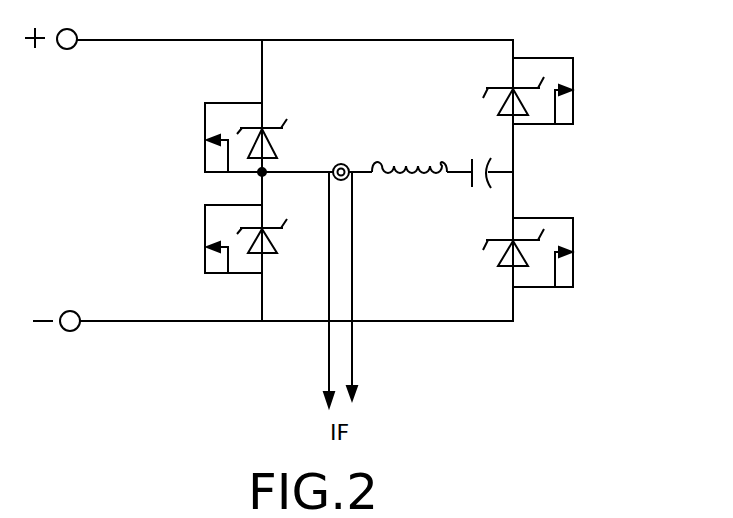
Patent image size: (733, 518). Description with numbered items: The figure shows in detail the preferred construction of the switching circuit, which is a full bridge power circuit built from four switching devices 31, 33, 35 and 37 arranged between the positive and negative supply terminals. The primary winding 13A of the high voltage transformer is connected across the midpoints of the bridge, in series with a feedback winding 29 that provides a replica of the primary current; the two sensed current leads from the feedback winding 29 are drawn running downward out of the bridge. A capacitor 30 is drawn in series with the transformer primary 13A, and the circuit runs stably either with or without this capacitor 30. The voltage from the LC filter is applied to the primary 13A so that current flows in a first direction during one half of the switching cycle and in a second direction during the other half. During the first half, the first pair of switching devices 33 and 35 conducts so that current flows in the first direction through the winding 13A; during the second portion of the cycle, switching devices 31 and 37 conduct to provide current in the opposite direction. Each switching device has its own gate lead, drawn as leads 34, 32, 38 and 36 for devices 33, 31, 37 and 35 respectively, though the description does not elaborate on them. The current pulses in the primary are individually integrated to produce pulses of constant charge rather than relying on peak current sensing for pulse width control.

The primary winding 13A is at (409, 147).
The feedback winding 29 is at (341, 164).
The capacitor 30 is at (481, 190).
The switching device 31 is at (303, 291).
The gate lead of transistor 31 32 is at (190, 212).
The switching device 33 is at (178, 123).
The gate lead of transistor 33 34 is at (192, 107).
The switching device 35 is at (580, 337).
The gate lead of transistor 35 36 is at (593, 230).
The switching device 37 is at (580, 42).
The gate lead of transistor 37 38 is at (592, 72).